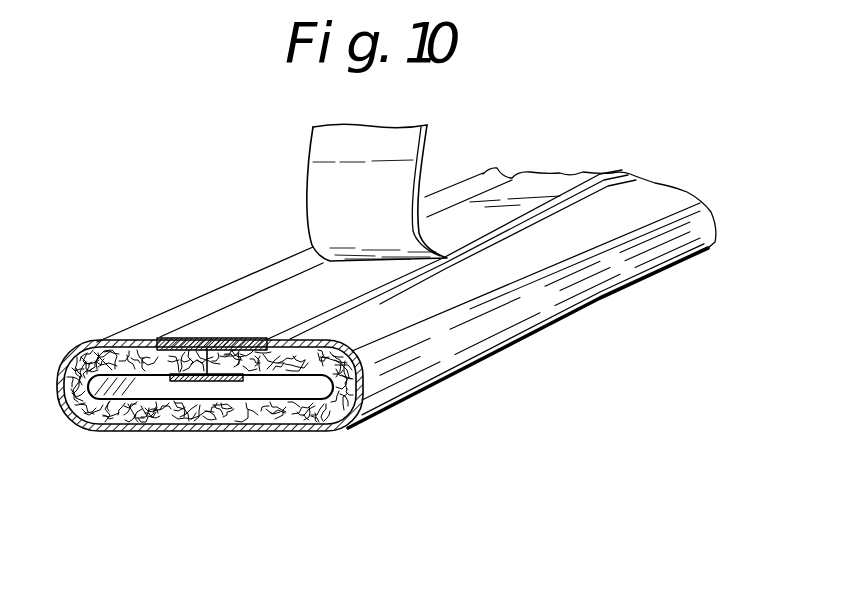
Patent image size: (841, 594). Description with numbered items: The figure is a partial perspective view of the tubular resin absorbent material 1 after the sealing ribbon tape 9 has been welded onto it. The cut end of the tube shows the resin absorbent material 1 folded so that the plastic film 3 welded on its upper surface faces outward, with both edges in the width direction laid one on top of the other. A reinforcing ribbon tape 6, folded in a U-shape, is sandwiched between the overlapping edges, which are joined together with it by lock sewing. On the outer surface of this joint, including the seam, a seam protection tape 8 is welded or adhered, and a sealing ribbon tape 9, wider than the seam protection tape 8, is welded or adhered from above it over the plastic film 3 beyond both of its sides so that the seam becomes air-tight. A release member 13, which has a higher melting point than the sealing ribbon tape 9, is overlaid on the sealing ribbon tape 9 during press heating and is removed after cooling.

The resin absorbent material 1 is at (140, 410).
The plastic film 3 is at (317, 428).
The reinforcing ribbon tape 6 is at (232, 380).
The seam protection tape 8 is at (167, 337).
The sealing ribbon tape 9 is at (265, 307).
The release member 13 is at (323, 183).